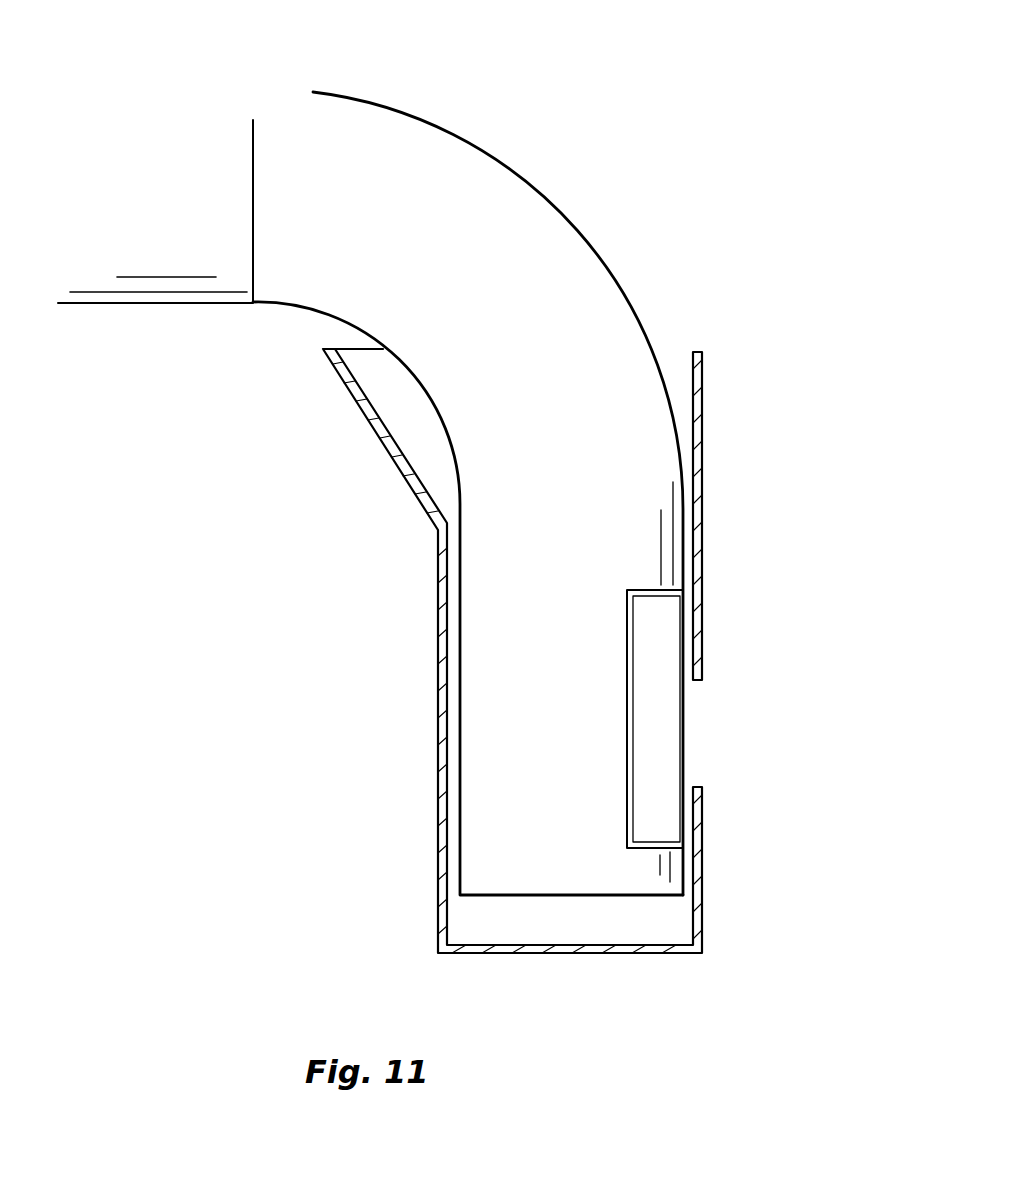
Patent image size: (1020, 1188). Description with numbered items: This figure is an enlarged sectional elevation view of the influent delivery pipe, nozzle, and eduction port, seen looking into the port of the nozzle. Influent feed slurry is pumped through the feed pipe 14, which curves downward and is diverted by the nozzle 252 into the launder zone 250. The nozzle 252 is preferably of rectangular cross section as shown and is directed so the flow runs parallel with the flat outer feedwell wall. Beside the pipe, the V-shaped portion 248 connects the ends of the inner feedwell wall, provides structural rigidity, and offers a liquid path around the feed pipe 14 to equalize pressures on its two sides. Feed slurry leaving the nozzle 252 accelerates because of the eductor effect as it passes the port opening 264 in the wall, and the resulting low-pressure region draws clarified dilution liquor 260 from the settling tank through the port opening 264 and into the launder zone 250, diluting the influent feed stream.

The feed pipe 14 is at (473, 150).
The V-shaped portion 248 is at (343, 383).
The launder zone 250 is at (538, 636).
The nozzle 252 is at (648, 758).
The inlet opening 264 is at (702, 697).
The dilution liquor 260 is at (732, 741).